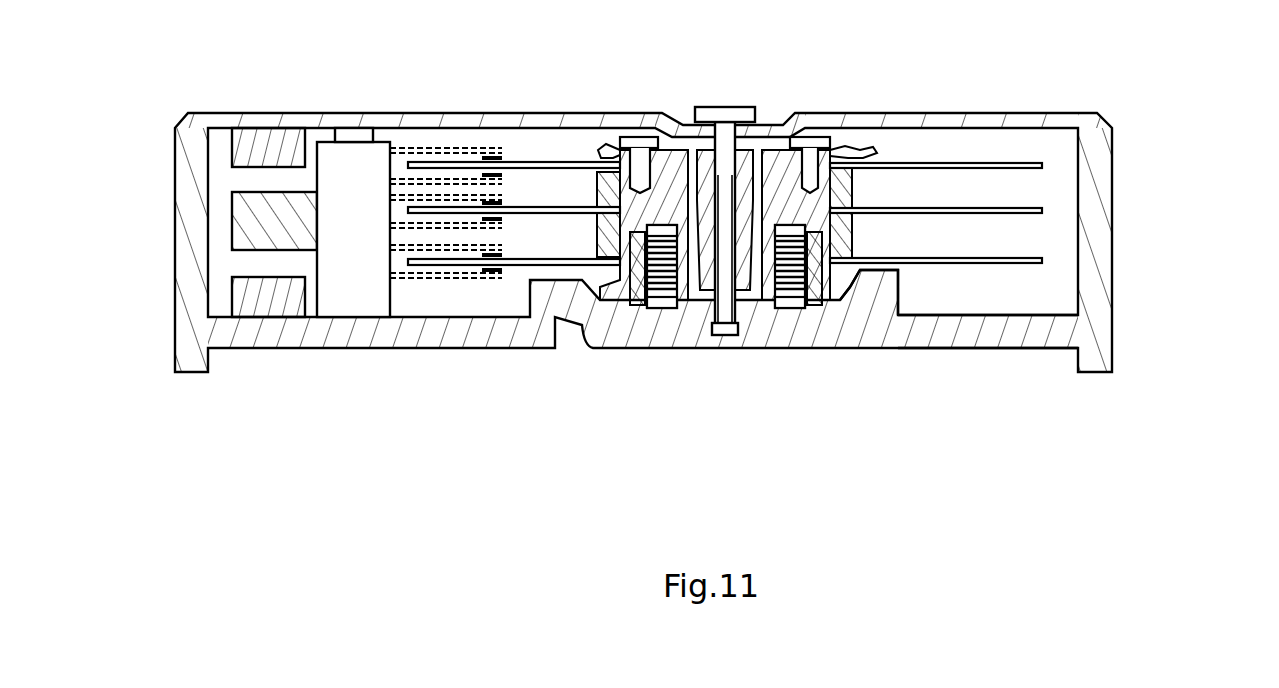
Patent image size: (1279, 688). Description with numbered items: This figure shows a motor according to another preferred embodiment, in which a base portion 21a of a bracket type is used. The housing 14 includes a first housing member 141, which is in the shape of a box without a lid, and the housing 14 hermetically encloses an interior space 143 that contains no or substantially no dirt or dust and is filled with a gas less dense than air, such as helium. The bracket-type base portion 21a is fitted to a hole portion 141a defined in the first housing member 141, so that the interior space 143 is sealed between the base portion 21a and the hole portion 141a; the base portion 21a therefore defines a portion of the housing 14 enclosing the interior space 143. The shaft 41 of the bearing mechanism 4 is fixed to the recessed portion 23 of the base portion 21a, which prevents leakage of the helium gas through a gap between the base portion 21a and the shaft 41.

The bearing mechanism 4 is at (768, 143).
The housing 14 is at (1008, 468).
The first housing member 141 is at (977, 325).
The hole portion 141a is at (897, 258).
The interior space 143 is at (1067, 223).
The base portion 21a is at (806, 300).
The recessed portion 23 is at (758, 270).
The shaft 41 is at (714, 307).